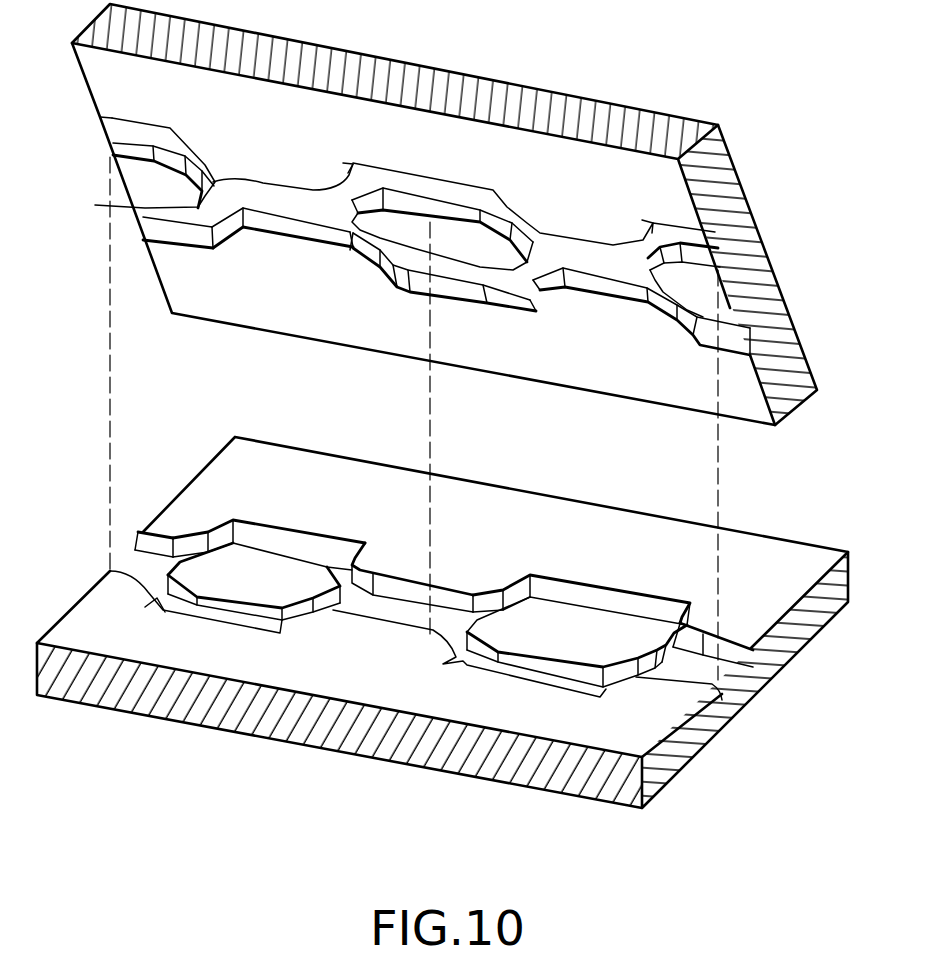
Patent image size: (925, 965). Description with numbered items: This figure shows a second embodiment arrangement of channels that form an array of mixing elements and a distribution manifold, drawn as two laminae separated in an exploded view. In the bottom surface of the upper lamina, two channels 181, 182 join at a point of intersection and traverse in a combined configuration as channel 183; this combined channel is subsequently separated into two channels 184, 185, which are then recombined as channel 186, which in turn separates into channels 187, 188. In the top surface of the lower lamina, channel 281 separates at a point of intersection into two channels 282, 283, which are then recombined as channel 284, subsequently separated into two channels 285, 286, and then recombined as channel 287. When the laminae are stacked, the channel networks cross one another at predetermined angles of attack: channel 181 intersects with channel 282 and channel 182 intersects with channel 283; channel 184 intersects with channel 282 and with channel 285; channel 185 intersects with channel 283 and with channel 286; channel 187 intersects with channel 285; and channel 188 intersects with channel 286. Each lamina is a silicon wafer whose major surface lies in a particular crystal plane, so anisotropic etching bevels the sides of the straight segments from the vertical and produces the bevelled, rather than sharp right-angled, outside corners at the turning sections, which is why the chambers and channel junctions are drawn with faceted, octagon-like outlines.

The channel 181 is at (144, 132).
The channel 182 is at (162, 216).
The channel 183 is at (275, 200).
The channel 184 is at (422, 182).
The channel 185 is at (445, 272).
The channel 186 is at (595, 262).
The channel 187 is at (706, 238).
The channel 188 is at (737, 325).
The channel 281 is at (135, 561).
The channel 282 is at (236, 618).
The channel 283 is at (294, 542).
The channel 284 is at (440, 616).
The channel 285 is at (540, 680).
The channel 286 is at (612, 606).
The channel 287 is at (727, 679).